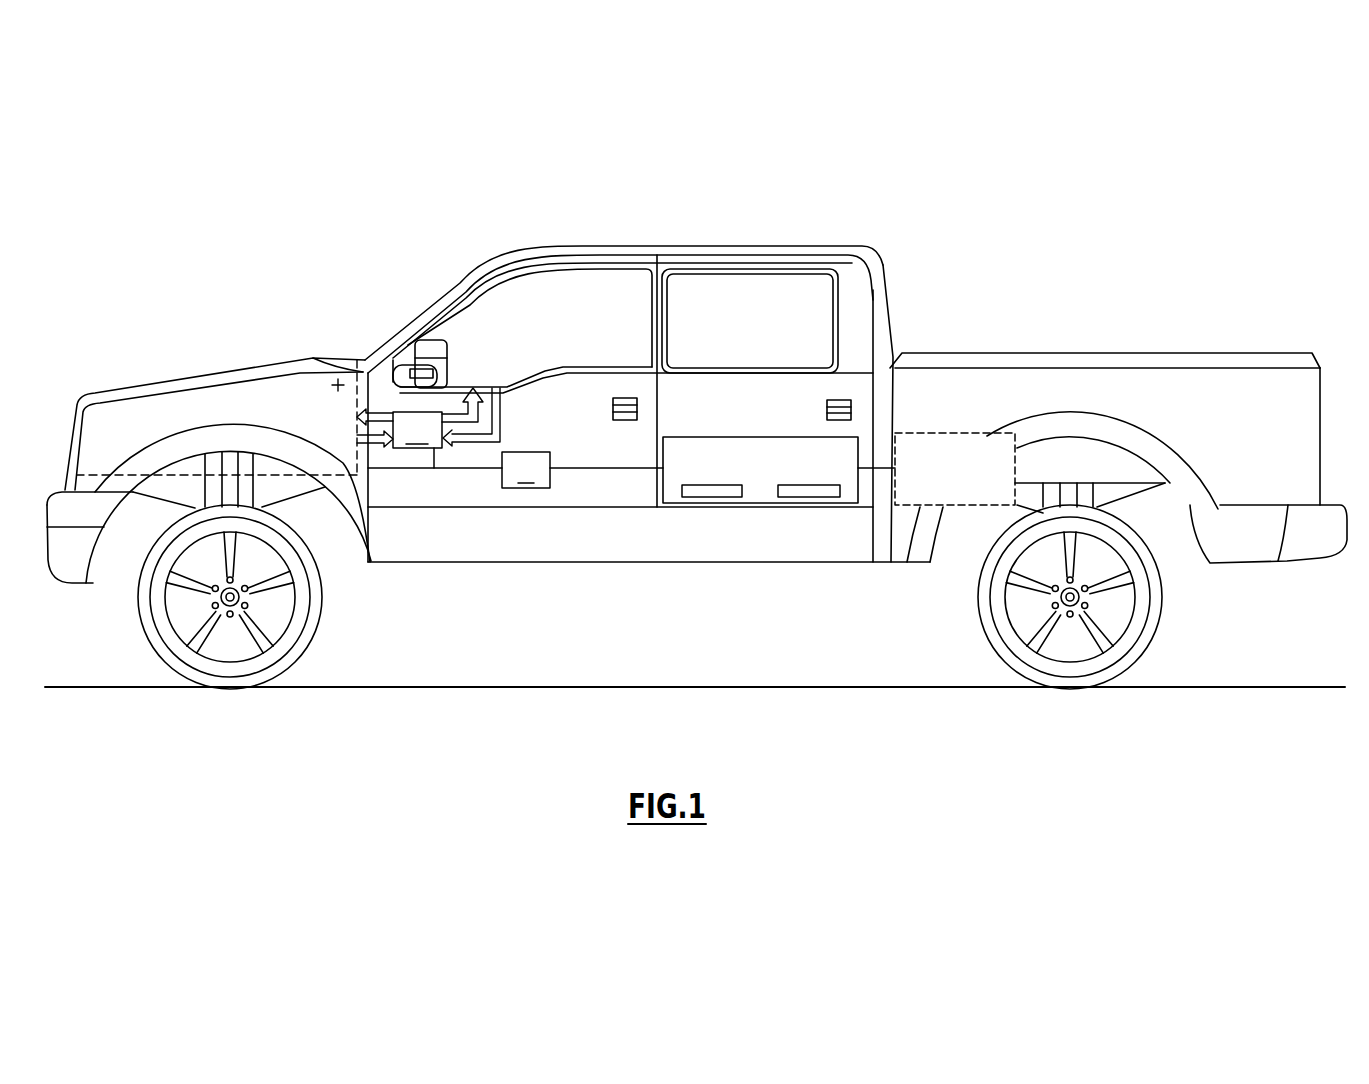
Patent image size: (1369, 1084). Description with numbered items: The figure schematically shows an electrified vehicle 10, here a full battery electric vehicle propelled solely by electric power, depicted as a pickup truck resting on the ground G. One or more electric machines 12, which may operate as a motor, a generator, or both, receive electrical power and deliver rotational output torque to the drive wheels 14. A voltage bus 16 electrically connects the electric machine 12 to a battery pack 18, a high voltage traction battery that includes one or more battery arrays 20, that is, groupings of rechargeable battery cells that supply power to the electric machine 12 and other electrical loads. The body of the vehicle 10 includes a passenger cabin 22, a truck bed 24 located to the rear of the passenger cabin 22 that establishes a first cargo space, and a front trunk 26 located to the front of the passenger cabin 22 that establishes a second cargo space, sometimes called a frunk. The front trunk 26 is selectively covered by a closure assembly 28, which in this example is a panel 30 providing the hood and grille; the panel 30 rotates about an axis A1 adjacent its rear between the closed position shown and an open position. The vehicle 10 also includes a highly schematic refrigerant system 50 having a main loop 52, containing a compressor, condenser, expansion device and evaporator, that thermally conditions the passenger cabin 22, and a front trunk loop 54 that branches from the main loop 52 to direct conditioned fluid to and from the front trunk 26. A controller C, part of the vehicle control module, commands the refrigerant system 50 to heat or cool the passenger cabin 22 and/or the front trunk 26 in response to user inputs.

The electrified vehicle 10 is at (706, 224).
The electric machine 12 is at (925, 433).
The drive wheels 14 is at (217, 670).
The voltage bus 16 is at (881, 484).
The battery pack 18 is at (750, 433).
The battery arrays 20 is at (796, 497).
The passenger cabin 22 is at (553, 300).
The truck bed 24 is at (1088, 343).
The front trunk 26 is at (332, 427).
The closure assembly 28 is at (172, 350).
The panel 30 is at (243, 362).
The refrigerant system 50 is at (417, 440).
The main loop 52 is at (512, 417).
The front trunk loop 54 is at (379, 461).
The controller C is at (526, 470).
The axis A1 is at (338, 388).
The ground G is at (429, 688).